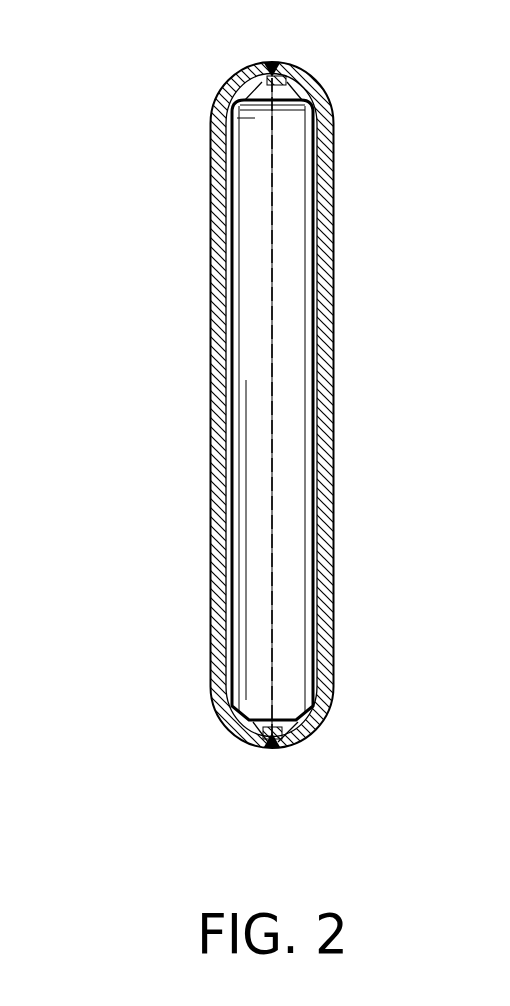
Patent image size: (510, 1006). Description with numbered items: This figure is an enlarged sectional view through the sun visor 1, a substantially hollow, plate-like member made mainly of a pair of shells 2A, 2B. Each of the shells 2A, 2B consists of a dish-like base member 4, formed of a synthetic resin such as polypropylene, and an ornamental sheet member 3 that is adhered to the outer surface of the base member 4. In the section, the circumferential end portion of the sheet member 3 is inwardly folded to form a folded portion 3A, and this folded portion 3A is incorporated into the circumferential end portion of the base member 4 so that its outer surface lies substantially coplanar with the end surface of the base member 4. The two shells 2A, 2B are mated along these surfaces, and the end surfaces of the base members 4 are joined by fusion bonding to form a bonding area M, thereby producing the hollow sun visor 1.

The sun visor 1 is at (103, 223).
The shell 2A is at (204, 275).
The shell 2B is at (337, 333).
The ornamental sheet member 3 is at (213, 152).
The folded portion 3A is at (242, 70).
The base member 4 is at (231, 278).
The bonding area M is at (268, 615).